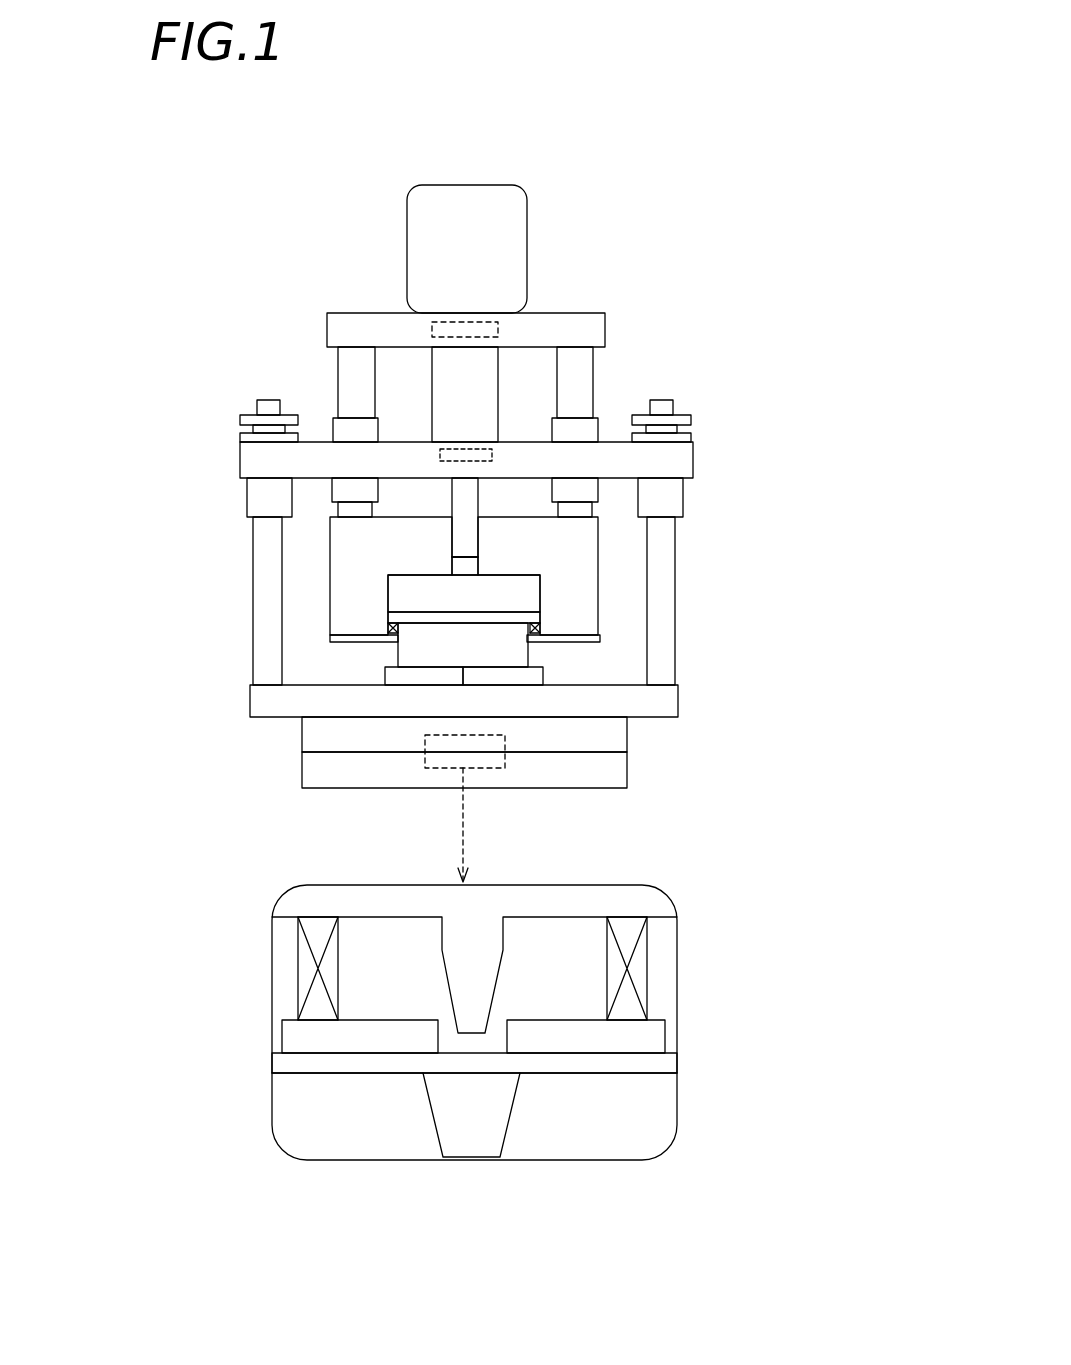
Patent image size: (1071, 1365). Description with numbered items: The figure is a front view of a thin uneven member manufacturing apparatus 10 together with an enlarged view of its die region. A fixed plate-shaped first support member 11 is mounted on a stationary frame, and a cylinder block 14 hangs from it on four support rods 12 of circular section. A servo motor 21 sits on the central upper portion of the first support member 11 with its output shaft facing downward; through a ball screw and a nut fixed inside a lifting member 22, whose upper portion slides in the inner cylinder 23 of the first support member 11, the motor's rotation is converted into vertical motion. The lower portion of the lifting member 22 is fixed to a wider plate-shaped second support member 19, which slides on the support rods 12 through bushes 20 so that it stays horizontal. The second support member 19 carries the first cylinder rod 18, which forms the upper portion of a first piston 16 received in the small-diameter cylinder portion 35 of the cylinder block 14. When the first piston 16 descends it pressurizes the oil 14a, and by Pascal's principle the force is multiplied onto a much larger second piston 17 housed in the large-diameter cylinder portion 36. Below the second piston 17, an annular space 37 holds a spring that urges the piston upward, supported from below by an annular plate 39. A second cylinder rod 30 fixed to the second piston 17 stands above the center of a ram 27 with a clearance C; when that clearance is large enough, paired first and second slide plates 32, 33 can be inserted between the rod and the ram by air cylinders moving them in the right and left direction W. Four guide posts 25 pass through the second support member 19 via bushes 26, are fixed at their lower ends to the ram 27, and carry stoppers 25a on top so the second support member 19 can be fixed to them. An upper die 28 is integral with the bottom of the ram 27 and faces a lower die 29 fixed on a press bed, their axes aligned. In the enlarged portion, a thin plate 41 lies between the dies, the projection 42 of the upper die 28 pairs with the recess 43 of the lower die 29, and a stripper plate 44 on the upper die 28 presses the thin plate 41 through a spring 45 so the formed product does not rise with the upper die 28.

The thin uneven member manufacturing apparatus 10 is at (632, 170).
The first support member 11 is at (587, 325).
The support rods 12 is at (335, 380).
The cylinder block 14 is at (600, 600).
The oil 14a is at (425, 592).
The first piston 16 is at (488, 555).
The second piston 17 is at (488, 620).
The first cylinder rod 18 is at (470, 492).
The second support member 19 is at (252, 460).
The bushes 20 is at (337, 432).
The servo motor 21 is at (527, 242).
The lifting member 22 is at (450, 388).
The inner cylinder 23 is at (530, 335).
The guide posts 25 is at (262, 535).
The stoppers 25a is at (256, 418).
The bushes 26 is at (258, 494).
The ram 27 is at (250, 700).
The upper die 28 is at (312, 732).
The lower die 29 is at (312, 770).
The second cylinder rod 30 is at (550, 684).
The first slide plate 32 is at (392, 675).
The second slide plate 33 is at (494, 676).
The small-diameter cylinder portion 35 is at (452, 532).
The large-diameter cylinder portion 36 is at (538, 597).
The annular space 37 is at (388, 630).
The annular plate 39 is at (578, 643).
The thin plate 41 is at (303, 1073).
The projection 42 is at (475, 1003).
The recess 43 is at (500, 1147).
The stripper plate 44 is at (290, 1040).
The spring 45 is at (295, 975).
The right and left direction W is at (215, 652).
The clearance C is at (610, 668).